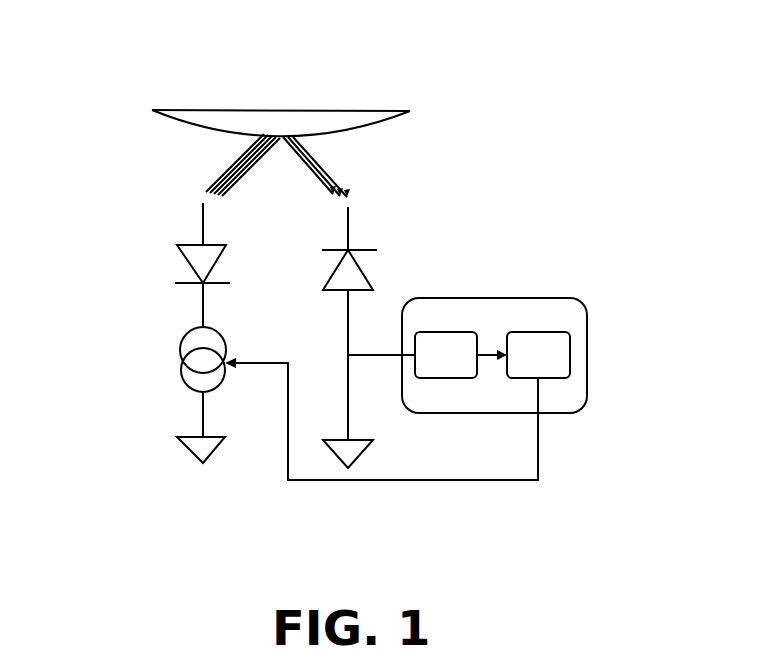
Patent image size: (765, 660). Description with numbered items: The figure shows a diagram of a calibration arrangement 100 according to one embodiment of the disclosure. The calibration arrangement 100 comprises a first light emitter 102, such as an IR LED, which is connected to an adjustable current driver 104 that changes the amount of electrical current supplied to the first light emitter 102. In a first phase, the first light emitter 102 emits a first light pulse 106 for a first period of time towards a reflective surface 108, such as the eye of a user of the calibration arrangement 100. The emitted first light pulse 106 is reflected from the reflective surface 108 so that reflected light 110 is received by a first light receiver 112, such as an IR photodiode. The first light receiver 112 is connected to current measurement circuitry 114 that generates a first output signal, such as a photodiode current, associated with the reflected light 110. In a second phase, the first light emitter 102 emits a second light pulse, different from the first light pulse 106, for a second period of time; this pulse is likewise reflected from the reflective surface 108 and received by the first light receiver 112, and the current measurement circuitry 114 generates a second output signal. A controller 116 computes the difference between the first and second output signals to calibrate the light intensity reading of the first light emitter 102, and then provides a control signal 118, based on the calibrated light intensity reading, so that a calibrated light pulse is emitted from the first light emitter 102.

The calibration arrangement 100 is at (135, 100).
The first light emitter 102 is at (183, 243).
The adjustable current driver 104 is at (182, 387).
The first light pulse 106 is at (205, 182).
The reflective surface 108 is at (235, 118).
The reflected light 110 is at (333, 174).
The first light receiver 112 is at (374, 242).
The current measurement circuitry 114 is at (440, 378).
The controller 116 is at (552, 332).
The control signal 118 is at (340, 482).